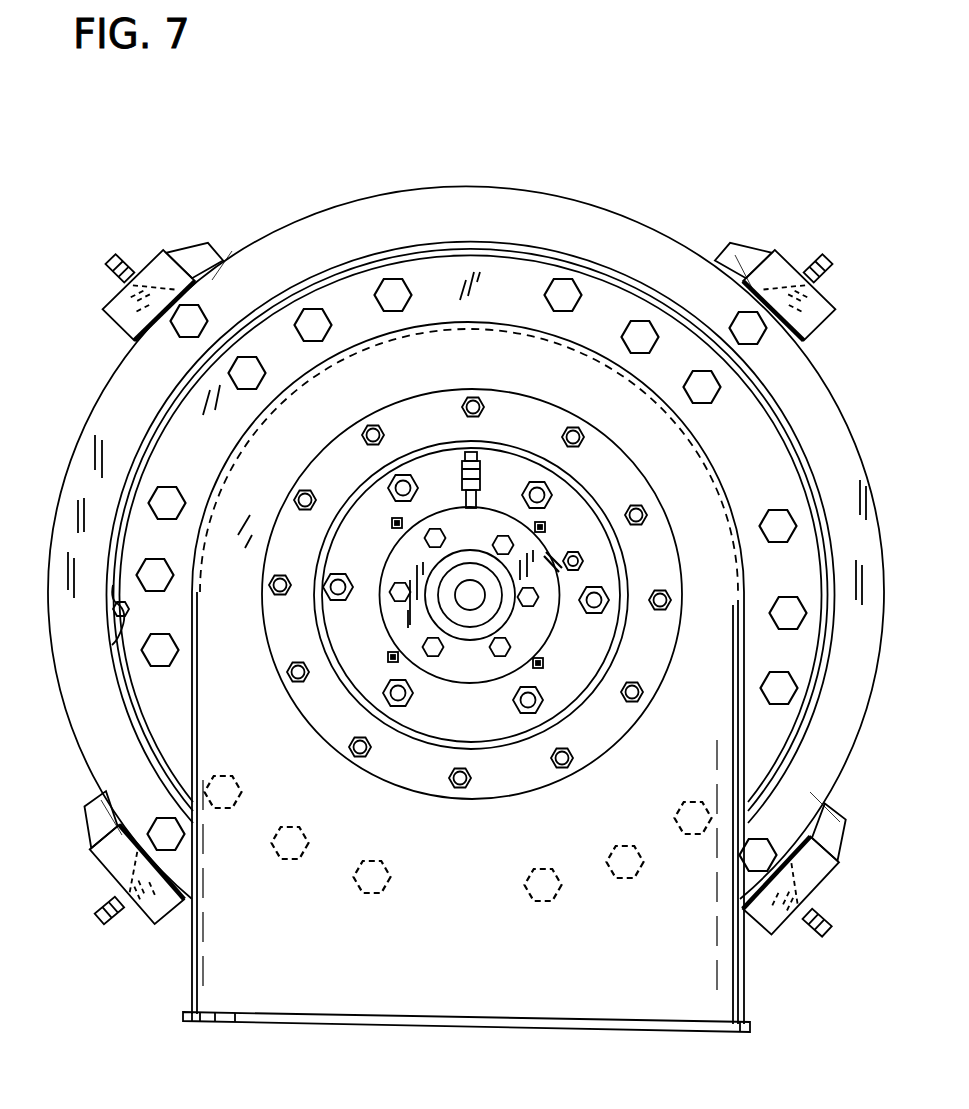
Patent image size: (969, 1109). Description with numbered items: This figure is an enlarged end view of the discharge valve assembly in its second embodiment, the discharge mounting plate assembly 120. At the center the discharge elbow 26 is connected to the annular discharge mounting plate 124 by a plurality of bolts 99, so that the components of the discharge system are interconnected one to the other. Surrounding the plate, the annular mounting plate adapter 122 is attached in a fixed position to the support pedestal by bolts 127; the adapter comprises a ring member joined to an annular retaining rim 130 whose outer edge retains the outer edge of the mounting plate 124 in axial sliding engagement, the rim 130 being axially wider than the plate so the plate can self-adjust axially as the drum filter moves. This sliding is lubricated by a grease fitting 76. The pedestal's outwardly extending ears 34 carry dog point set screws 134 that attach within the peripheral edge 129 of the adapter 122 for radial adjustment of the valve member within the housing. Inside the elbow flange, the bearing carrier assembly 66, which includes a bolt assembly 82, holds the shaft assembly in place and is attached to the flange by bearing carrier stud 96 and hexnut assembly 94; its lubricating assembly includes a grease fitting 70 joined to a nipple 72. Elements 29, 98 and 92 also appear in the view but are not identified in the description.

The discharge mounting plate assembly 120 is at (607, 170).
The annular mounting plate adapter 122 is at (808, 392).
The annular discharge mounting plate 124 is at (358, 268).
The bolts 127 is at (210, 283).
The peripheral edge 129 is at (870, 440).
The annular retaining rim 130 is at (150, 443).
The dog point set screws 134 is at (125, 256).
The ears 34 is at (167, 270).
The backing plate 29 is at (188, 461).
The discharge elbow 26 is at (291, 798).
The bolts 99 is at (313, 345).
The flange bolts 98 is at (567, 430).
The bearing carrier assembly 66 is at (620, 642).
The bearing carrier stud 96 is at (394, 494).
The hexnut assembly 94 is at (340, 600).
The set screws 92 is at (548, 524).
The bolt assembly 82 is at (502, 660).
The grease fitting 76 is at (465, 452).
The grease fitting 70 is at (462, 465).
The nipple 72 is at (458, 482).